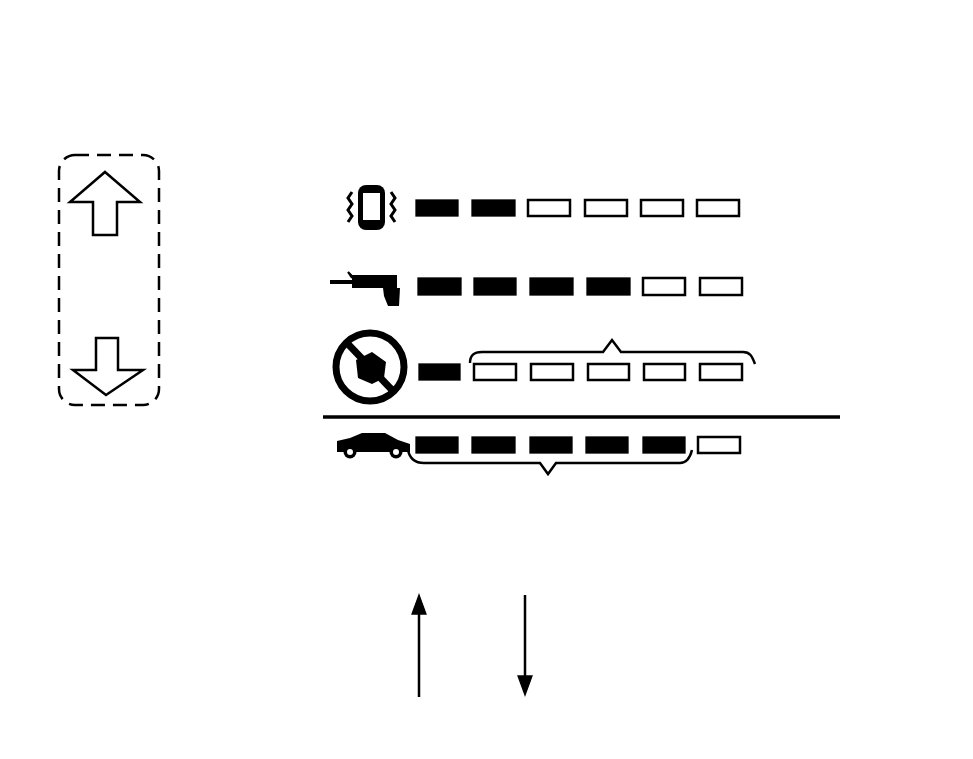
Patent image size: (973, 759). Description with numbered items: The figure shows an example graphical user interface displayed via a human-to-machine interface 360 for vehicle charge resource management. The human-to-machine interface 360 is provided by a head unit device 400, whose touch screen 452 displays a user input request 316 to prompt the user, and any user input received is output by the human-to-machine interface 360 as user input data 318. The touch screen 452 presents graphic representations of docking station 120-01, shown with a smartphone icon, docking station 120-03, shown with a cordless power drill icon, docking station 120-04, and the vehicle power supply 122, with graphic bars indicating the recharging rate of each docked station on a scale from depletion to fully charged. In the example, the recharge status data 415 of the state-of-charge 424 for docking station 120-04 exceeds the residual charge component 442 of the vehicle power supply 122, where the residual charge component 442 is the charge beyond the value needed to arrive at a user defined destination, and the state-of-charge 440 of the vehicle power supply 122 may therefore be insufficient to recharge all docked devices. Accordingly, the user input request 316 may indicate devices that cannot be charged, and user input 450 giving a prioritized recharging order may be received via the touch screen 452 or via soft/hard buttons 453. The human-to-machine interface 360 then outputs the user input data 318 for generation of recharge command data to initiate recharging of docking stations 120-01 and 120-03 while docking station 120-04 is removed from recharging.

The head unit device 400 is at (790, 70).
The docking station 120-01 is at (340, 210).
The docking station 120-03 is at (332, 290).
The docking station 120-04 is at (334, 367).
The user input 450 is at (86, 323).
The touch screen 452 is at (579, 247).
The soft/hard buttons 453 is at (137, 404).
The recharge status data 415 is at (612, 340).
The state-of-charge 424 is at (660, 348).
The state-of-charge 440 is at (656, 479).
The residual charge component 442 is at (550, 479).
The vehicle power supply 122 is at (338, 445).
The user input request 316 is at (367, 646).
The user input data 318 is at (572, 645).
The human-to-machine interface 360 is at (607, 562).